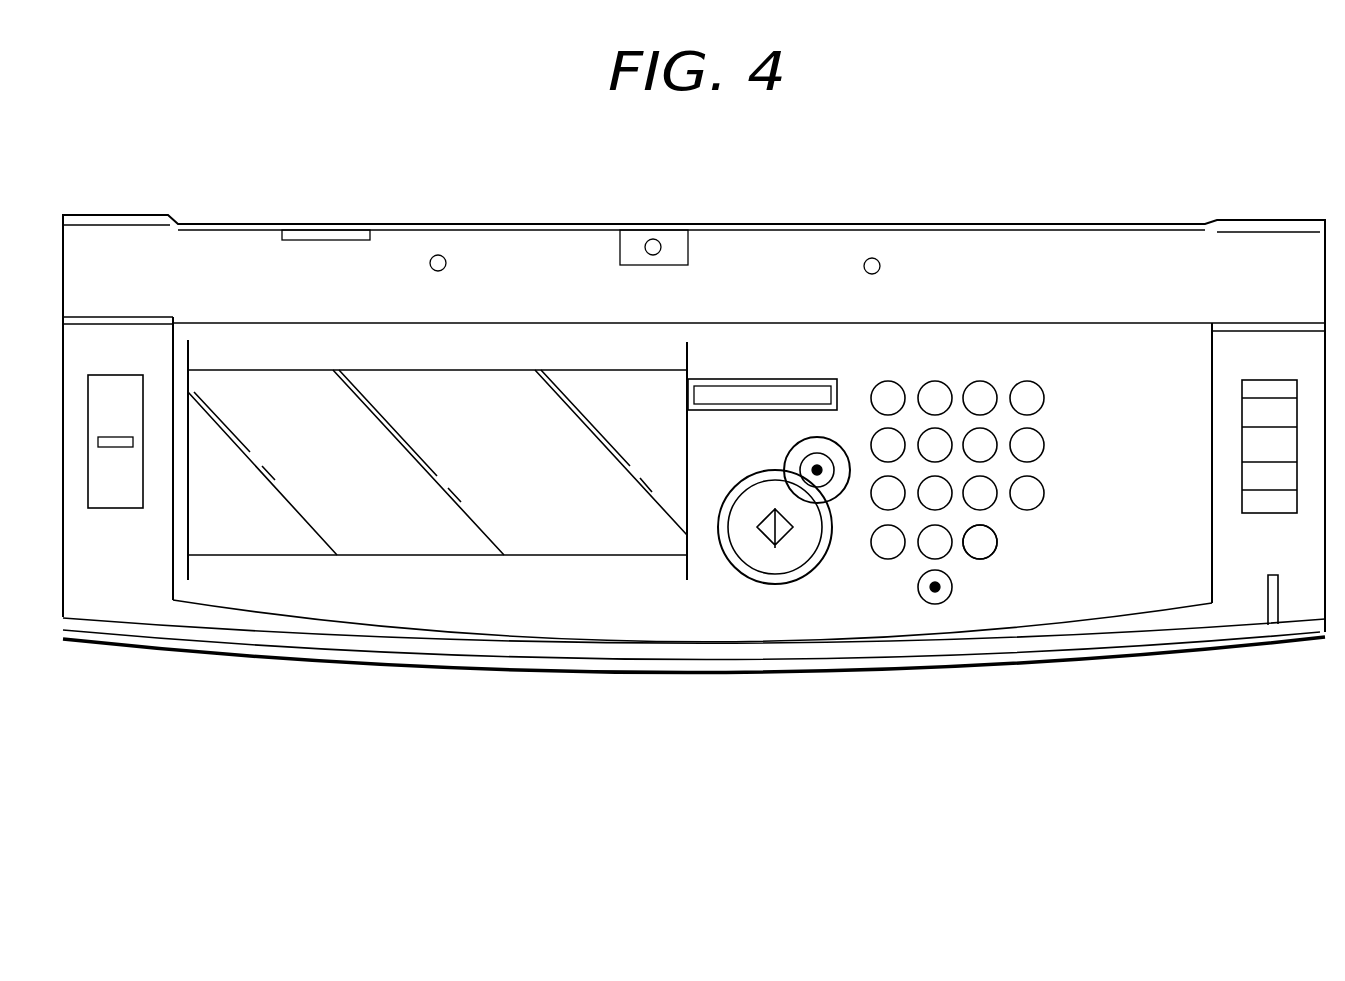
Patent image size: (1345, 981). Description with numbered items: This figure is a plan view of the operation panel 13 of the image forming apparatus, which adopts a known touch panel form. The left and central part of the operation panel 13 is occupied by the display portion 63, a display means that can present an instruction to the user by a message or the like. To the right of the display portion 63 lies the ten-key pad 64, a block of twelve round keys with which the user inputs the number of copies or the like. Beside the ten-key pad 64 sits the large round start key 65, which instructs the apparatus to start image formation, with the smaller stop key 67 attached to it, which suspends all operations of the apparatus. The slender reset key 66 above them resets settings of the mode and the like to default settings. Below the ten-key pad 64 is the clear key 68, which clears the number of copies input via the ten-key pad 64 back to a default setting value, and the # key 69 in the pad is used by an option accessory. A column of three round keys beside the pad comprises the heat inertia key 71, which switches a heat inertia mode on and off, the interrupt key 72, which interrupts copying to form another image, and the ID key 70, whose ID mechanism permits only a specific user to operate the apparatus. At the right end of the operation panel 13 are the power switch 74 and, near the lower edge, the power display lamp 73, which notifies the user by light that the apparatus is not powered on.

The operation panel 13 is at (600, 720).
The display portion 63 is at (253, 523).
The ten-key pad 64 is at (872, 368).
The start key 65 is at (775, 557).
The reset key 66 is at (772, 395).
The stop key 67 is at (819, 472).
The clear key 68 is at (937, 590).
The # key 69 is at (987, 547).
The ID key 70 is at (1035, 493).
The heat inertia key 71 is at (1027, 392).
The interrupt key 72 is at (1037, 440).
The power display lamp 73 is at (1266, 595).
The power switch 74 is at (1265, 435).